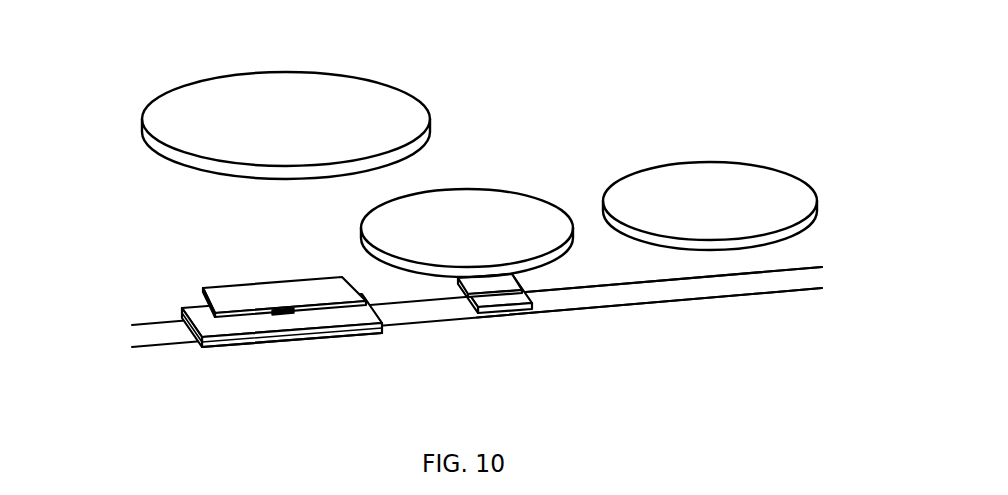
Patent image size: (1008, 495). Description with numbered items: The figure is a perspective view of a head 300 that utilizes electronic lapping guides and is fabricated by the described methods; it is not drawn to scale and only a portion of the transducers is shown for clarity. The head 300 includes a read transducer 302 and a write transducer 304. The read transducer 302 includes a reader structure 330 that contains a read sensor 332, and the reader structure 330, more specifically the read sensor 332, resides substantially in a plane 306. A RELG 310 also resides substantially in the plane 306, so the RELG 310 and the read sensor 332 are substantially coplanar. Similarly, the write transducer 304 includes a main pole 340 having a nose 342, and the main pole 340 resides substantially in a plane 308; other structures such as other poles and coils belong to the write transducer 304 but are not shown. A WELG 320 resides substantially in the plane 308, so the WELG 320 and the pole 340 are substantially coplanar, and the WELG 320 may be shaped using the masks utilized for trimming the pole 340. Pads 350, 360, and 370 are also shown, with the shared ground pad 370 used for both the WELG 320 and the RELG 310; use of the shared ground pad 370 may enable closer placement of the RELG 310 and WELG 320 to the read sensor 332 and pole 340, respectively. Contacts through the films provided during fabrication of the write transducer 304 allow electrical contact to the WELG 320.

The head 300 is at (487, 33).
The read transducer 302 is at (179, 372).
The write transducer 304 is at (99, 321).
The plane 306 is at (842, 296).
The plane 308 is at (845, 258).
The RELG 310 is at (505, 314).
The WELG 320 is at (547, 287).
The reader structure 330 is at (183, 310).
The read sensor 332 is at (301, 360).
The main pole 340 is at (237, 285).
The nose 342 is at (285, 283).
The pad 350 is at (707, 162).
The pad 360 is at (477, 188).
The shared ground pad 370 is at (147, 105).